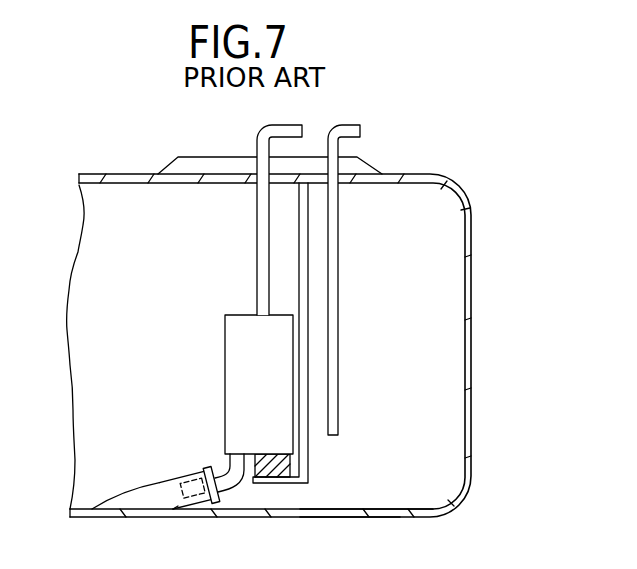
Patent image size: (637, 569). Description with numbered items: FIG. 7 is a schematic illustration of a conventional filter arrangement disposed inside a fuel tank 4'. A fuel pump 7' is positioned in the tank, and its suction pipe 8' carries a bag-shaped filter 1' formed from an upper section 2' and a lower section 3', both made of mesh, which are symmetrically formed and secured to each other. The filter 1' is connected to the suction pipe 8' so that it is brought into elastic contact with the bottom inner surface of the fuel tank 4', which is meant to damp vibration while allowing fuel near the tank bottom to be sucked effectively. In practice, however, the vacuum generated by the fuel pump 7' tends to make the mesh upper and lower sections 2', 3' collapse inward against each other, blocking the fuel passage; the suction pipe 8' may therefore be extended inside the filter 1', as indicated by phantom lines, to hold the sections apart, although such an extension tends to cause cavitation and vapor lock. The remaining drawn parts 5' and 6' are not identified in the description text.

The filter 1' is at (185, 462).
The upper section 2' is at (125, 474).
The lower section 3' is at (176, 530).
The fuel tank 4' is at (292, 345).
The tank bottom wall 5' is at (366, 490).
The fuel pipe 6' is at (318, 280).
The fuel pump 7' is at (239, 384).
The suction pipe 8' is at (226, 511).